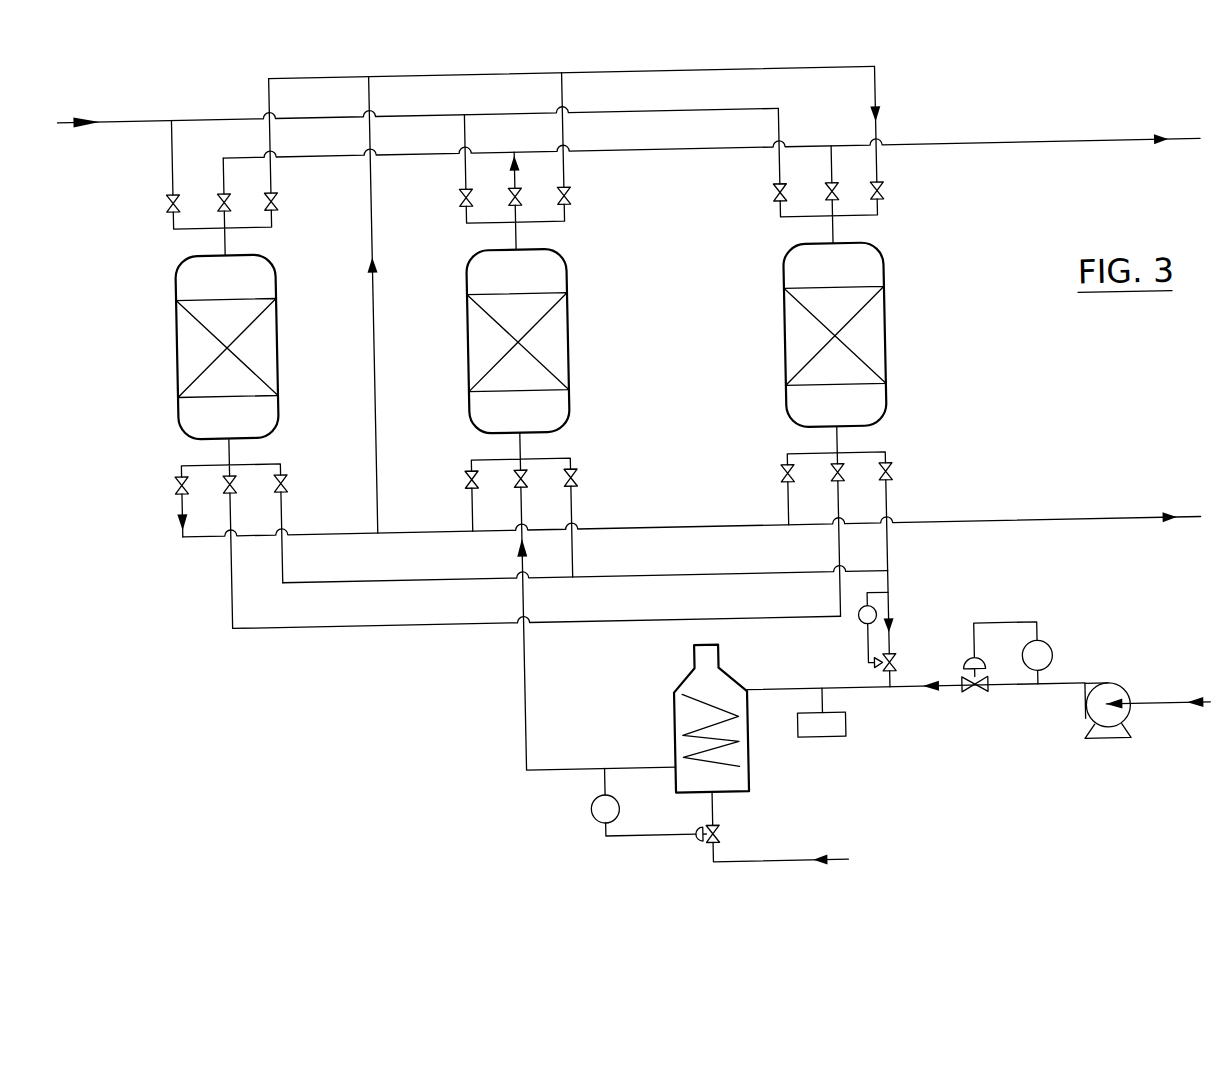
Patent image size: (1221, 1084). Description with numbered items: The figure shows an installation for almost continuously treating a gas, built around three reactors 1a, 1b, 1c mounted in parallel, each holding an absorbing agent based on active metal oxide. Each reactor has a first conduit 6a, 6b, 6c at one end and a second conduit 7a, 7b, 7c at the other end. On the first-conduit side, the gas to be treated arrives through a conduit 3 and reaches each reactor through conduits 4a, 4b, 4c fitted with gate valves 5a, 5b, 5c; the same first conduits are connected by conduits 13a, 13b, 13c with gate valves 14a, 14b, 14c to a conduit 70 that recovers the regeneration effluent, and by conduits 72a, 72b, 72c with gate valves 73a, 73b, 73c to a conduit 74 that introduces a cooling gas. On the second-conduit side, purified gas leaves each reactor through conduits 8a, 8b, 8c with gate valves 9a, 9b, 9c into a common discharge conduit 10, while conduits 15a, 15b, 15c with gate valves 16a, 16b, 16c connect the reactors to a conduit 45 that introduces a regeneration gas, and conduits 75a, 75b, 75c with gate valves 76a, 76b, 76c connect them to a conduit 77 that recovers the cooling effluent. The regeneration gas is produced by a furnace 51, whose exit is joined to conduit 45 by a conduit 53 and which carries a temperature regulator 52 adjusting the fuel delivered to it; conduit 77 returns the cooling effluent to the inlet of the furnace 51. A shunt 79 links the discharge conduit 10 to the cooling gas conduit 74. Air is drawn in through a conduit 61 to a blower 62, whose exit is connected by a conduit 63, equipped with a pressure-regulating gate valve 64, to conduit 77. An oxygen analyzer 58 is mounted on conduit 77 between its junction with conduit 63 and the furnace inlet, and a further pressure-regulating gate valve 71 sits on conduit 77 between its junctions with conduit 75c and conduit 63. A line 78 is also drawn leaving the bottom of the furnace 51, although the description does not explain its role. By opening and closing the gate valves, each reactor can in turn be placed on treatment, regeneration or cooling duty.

The conduit for introducing the gas to be treated 3 is at (62, 121).
The conduit 4a is at (168, 153).
The conduit 4b is at (462, 144).
The conduit 4c is at (780, 133).
The gate valve 5a is at (166, 206).
The gate valve 5b is at (461, 207).
The gate valve 5c is at (774, 211).
The first conduit 6a is at (220, 250).
The first conduit 6b is at (505, 250).
The first conduit 6c is at (845, 252).
The reactor 1a is at (170, 354).
The reactor 1b is at (560, 356).
The reactor 1c is at (878, 348).
The second conduit 7a is at (222, 457).
The second conduit 7b is at (513, 455).
The second conduit 7c is at (831, 462).
The conduit 8a is at (168, 509).
The conduit 8b is at (462, 524).
The conduit 8c is at (778, 531).
The gate valve 9a is at (170, 491).
The gate valve 9b is at (462, 487).
The gate valve 9c is at (779, 488).
The conduit for discharge of the purified gas 10 is at (1072, 539).
The conduit 13a is at (213, 177).
The conduit 13b is at (507, 193).
The conduit 13c is at (831, 202).
The gate valve 14a is at (221, 207).
The gate valve 14b is at (514, 207).
The gate valve 14c is at (826, 207).
The conduit 15a is at (218, 590).
The conduit 15b is at (518, 611).
The conduit 15c is at (826, 570).
The gate valve 16a is at (222, 499).
The gate valve 16b is at (515, 503).
The gate valve 16c is at (823, 500).
The conduit for introducing a regeneration gas 45 is at (427, 639).
The furnace 51 is at (737, 775).
The temperature regulator 52 is at (576, 819).
The conduit 53 is at (516, 726).
The oxygen analyzer 58 is at (832, 744).
The conduit for introducing air 61 is at (1156, 725).
The blower 62 is at (1094, 702).
The conduit 63 is at (941, 709).
The gate valve for pressure regulation 64 is at (964, 715).
The conduit of recovery of the regeneration effluent 70 is at (1062, 159).
The gate valve of pressure regulation 71 is at (885, 678).
The conduit 72a is at (270, 143).
The conduit 72b is at (563, 108).
The conduit 72c is at (876, 108).
The gate valve 73a is at (270, 211).
The gate valve 73b is at (564, 216).
The gate valve 73c is at (878, 215).
The conduit for introducing a cooling gas 74 is at (495, 90).
The conduit 75a is at (272, 566).
The conduit 75b is at (564, 565).
The conduit 75c is at (876, 563).
The gate valve 76a is at (273, 492).
The gate valve 76b is at (570, 494).
The gate valve 76c is at (881, 490).
The conduit for recovery of the cooling effluent 77 is at (394, 588).
The heat exchanger drain line 78 is at (753, 873).
The shunt 79 is at (371, 373).